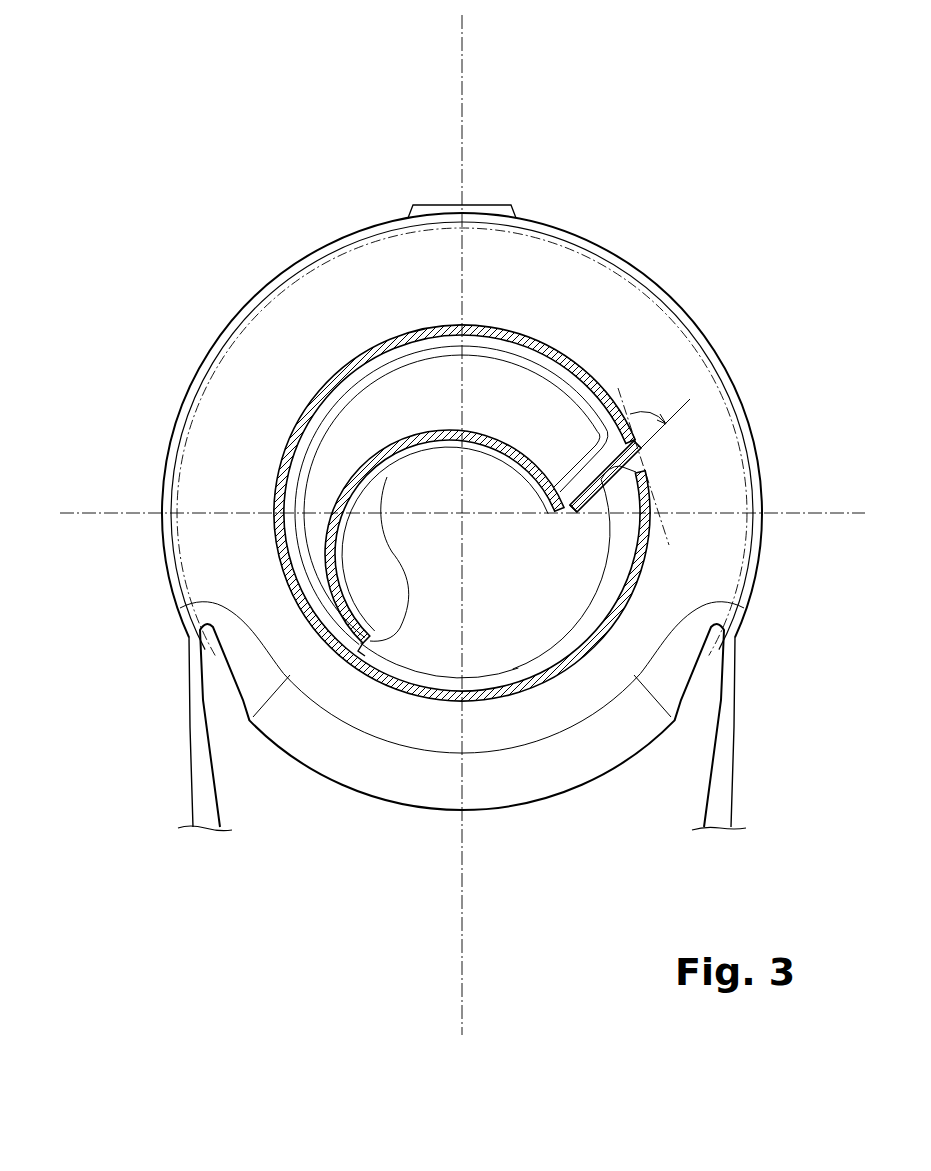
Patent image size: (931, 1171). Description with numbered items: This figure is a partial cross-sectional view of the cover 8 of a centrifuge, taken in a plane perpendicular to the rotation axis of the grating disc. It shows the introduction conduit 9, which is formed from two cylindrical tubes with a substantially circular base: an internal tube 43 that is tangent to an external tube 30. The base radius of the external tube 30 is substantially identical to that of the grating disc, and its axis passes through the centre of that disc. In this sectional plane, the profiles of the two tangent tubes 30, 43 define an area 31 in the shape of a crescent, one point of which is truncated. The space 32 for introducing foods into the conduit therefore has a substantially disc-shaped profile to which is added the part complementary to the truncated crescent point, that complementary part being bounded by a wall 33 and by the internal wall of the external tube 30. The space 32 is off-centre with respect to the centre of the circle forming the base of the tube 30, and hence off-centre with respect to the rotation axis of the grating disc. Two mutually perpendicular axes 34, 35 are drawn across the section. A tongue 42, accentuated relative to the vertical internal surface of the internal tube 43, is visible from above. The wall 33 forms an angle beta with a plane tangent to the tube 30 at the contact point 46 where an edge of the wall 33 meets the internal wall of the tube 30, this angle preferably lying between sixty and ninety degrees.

The cover 8 is at (188, 224).
The introduction conduit 9 is at (528, 334).
The external tube 30 is at (630, 594).
The area 31 is at (400, 407).
The space 32 is at (503, 636).
The wall 33 is at (577, 514).
The axis 34 is at (465, 40).
The axis 35 is at (92, 513).
The tongue 42 is at (374, 568).
The internal tube 43 is at (414, 457).
The contact point 46 is at (636, 474).